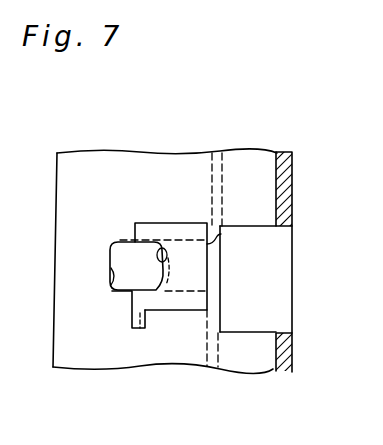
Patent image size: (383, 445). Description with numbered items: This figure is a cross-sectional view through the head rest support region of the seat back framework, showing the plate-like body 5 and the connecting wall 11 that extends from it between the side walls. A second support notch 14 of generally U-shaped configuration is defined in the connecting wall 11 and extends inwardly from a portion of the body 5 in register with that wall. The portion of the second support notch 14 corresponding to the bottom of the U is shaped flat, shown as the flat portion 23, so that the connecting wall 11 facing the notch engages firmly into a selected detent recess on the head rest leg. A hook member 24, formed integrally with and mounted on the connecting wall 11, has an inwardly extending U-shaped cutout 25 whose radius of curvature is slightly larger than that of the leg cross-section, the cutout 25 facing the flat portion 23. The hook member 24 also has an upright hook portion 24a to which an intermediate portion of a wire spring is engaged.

The plate-like body 5 is at (290, 347).
The connecting wall 11 is at (67, 229).
The second support notch 14 is at (183, 290).
The flat portion 23 is at (111, 286).
The hook member 24 is at (157, 222).
The upright hook portion 24a is at (146, 322).
The U-shaped cutout 25 is at (162, 247).